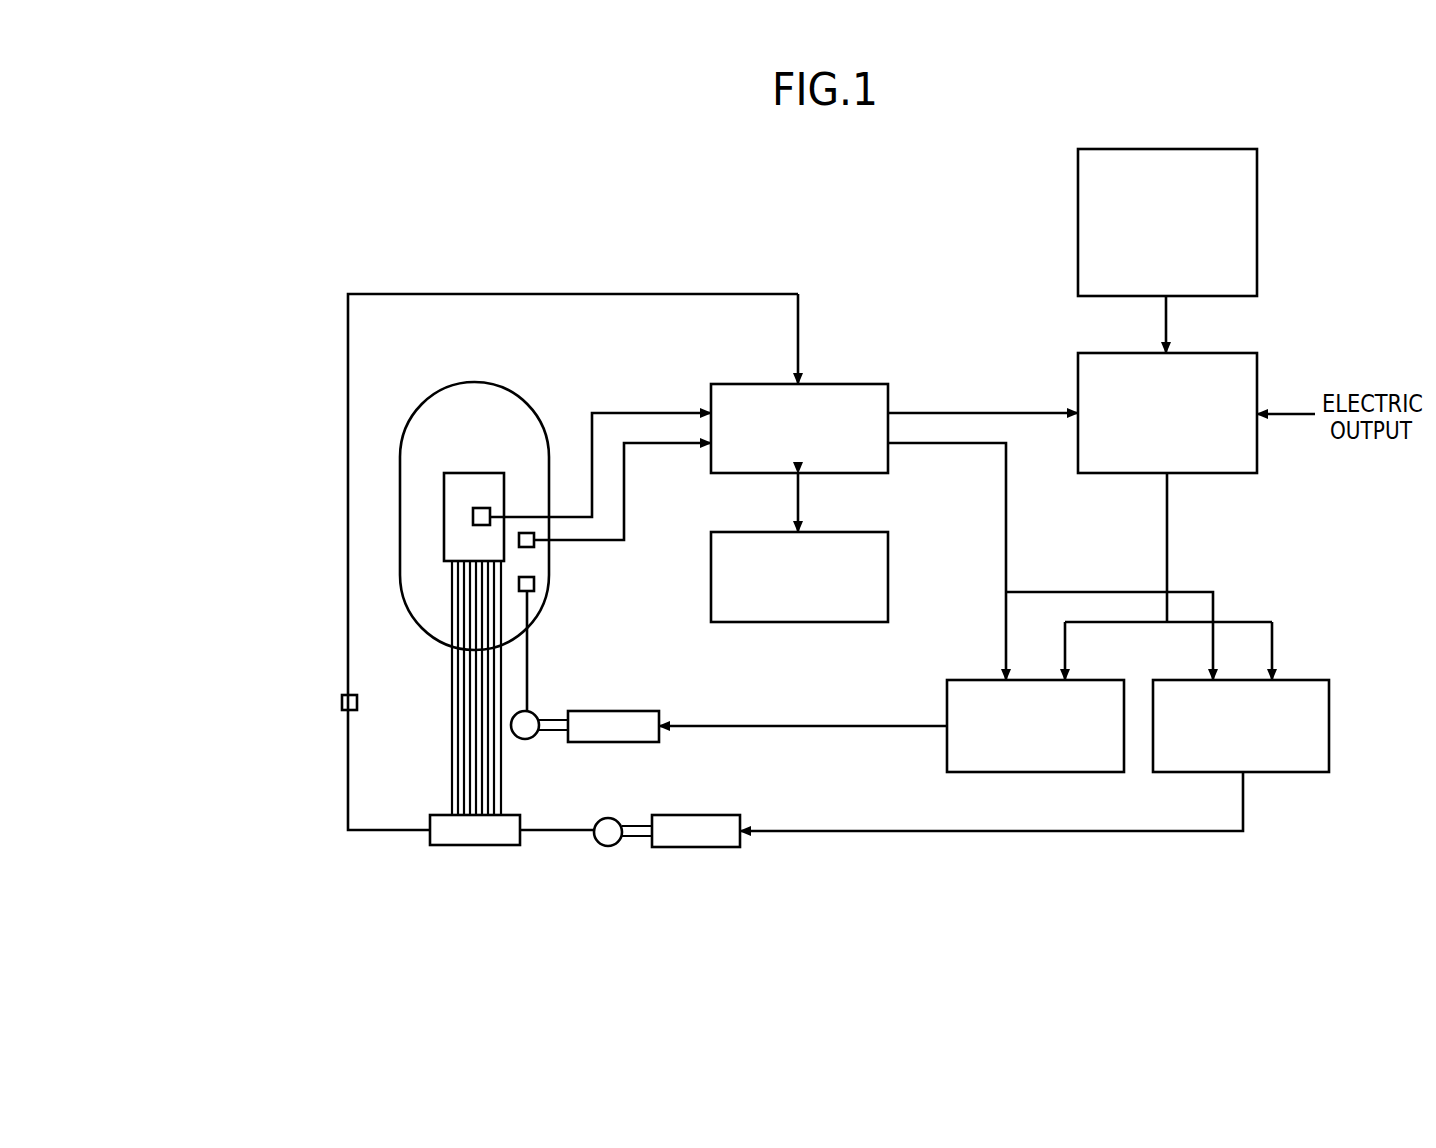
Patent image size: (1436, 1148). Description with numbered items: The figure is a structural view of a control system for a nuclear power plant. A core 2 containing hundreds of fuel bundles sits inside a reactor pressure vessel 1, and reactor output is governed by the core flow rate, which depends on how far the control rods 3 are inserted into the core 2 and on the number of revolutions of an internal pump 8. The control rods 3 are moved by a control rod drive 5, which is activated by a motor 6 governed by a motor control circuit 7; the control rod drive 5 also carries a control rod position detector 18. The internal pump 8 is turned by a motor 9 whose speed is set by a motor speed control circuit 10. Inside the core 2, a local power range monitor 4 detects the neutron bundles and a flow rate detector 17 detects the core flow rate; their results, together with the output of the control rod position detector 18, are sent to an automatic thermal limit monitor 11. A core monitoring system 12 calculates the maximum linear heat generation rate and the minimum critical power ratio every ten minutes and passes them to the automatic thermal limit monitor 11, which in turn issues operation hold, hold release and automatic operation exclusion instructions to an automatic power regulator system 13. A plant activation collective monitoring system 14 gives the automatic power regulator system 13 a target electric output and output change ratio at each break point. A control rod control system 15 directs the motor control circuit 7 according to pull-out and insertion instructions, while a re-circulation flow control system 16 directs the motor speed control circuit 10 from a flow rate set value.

The reactor pressure vessel 1 is at (440, 386).
The core 2 is at (459, 473).
The control rods 3 is at (452, 668).
The local power range monitor 4 is at (484, 508).
The control rod drive 5 is at (475, 845).
The motor 6 is at (608, 846).
The motor control circuit 7 is at (693, 847).
The internal pump 8 is at (534, 588).
The motor 9 is at (527, 740).
The motor speed control circuit 10 is at (641, 711).
The automatic thermal limit monitor 11 is at (860, 384).
The core monitoring system 12 is at (888, 575).
The automatic power regulator system 13 is at (1109, 474).
The plant activation collective monitoring system 14 is at (1078, 220).
The control rod control system 15 is at (1329, 722).
The re-circulation flow control system 16 is at (947, 766).
The flow rate detector 17 is at (528, 548).
The control rod position detector 18 is at (342, 703).